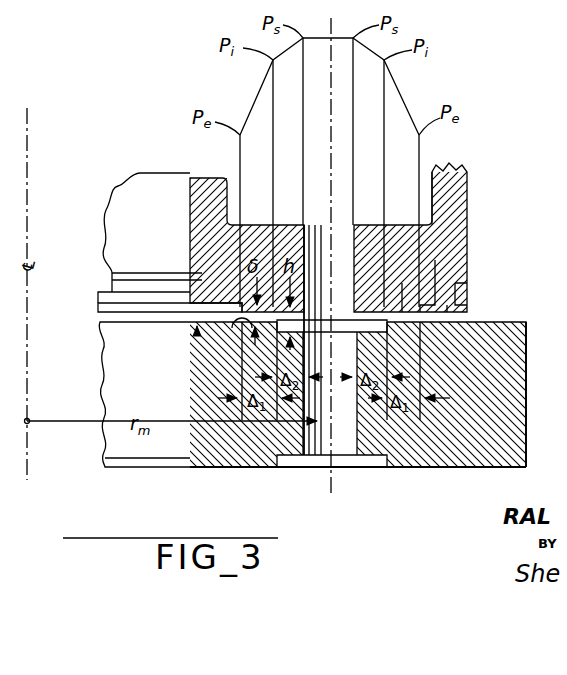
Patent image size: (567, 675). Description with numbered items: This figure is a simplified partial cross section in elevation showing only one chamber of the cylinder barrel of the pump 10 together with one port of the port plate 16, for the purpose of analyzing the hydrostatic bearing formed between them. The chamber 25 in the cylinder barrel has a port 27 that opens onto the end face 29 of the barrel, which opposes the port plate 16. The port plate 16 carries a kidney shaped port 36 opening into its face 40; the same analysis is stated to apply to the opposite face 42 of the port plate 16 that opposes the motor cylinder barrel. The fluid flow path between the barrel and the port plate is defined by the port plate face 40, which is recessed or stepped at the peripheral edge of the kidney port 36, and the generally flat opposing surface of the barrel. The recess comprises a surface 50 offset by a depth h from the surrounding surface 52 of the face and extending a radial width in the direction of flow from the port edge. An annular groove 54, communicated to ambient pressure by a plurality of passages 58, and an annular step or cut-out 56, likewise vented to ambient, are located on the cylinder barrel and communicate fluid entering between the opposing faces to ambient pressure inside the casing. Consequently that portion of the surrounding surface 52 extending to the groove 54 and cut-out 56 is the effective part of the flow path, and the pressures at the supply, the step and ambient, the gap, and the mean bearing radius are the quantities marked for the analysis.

The pump 10 is at (476, 232).
The port plate 16 is at (526, 343).
The chamber 25 is at (432, 190).
The port 27 is at (343, 235).
The end face 29 is at (190, 337).
The kidney shaped port 36 is at (343, 440).
The port plate face 40 is at (485, 314).
The port plate face 42 is at (476, 472).
The recess surface 50 is at (368, 312).
The surrounding surface 52 is at (311, 309).
The annular groove 54 is at (435, 260).
The annular step or cut-out 56 is at (215, 298).
The passages 58 is at (455, 283).